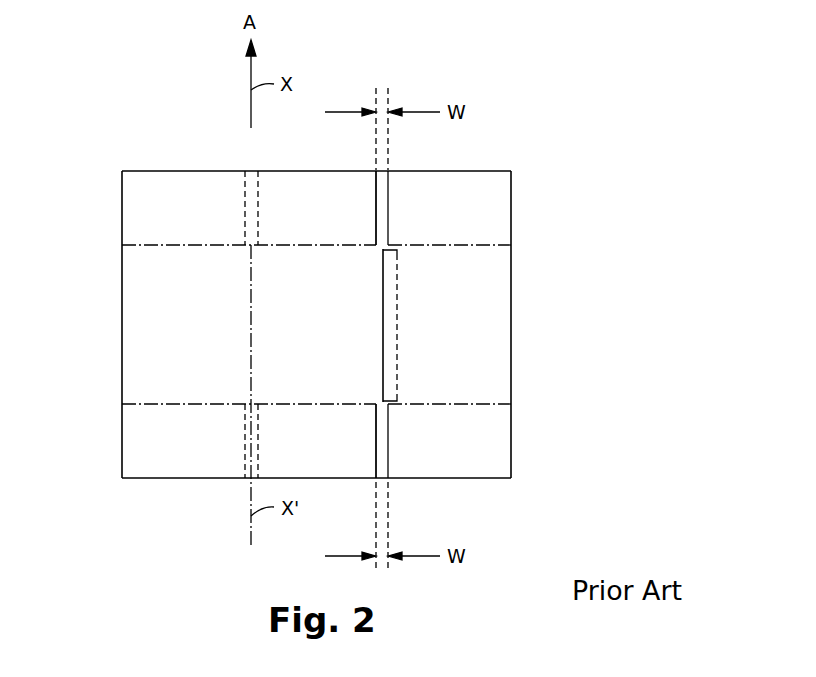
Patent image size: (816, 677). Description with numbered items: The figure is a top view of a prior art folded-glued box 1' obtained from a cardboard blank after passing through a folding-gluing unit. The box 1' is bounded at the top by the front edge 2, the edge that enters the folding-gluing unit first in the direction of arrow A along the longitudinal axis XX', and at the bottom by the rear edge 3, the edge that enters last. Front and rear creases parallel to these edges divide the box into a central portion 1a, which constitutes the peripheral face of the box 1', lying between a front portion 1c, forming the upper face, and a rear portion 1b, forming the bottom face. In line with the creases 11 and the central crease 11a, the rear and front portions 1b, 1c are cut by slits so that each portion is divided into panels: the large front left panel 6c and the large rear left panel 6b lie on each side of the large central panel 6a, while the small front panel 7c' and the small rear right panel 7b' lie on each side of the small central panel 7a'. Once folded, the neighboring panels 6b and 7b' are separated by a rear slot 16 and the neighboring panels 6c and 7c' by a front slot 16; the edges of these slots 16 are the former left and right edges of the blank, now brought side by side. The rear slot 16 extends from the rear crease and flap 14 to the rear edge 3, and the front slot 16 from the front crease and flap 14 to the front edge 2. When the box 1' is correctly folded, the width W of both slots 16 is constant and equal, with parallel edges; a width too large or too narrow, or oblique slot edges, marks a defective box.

The folded box 1' is at (356, 261).
The front edge 2 is at (175, 171).
The rear edge 3 is at (473, 479).
The creases 11 is at (122, 338).
The central crease 11a is at (251, 326).
The slot 16 is at (384, 200).
The front portion 1c is at (376, 208).
The central portion 1a is at (383, 325).
The rear portion 1b is at (376, 444).
The flap 14 is at (398, 297).
The large front left panel 6c is at (185, 221).
The large central panel 6a is at (185, 356).
The large rear left panel 6b is at (185, 448).
The small front panel 7c' is at (449, 223).
The small central panel 7a' is at (449, 370).
The small rear right panel 7b' is at (447, 437).